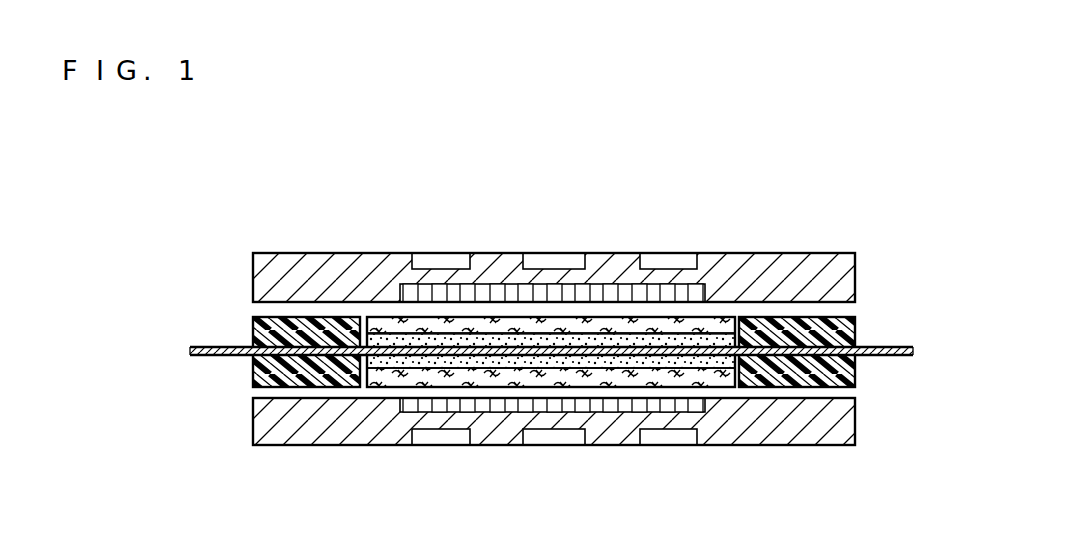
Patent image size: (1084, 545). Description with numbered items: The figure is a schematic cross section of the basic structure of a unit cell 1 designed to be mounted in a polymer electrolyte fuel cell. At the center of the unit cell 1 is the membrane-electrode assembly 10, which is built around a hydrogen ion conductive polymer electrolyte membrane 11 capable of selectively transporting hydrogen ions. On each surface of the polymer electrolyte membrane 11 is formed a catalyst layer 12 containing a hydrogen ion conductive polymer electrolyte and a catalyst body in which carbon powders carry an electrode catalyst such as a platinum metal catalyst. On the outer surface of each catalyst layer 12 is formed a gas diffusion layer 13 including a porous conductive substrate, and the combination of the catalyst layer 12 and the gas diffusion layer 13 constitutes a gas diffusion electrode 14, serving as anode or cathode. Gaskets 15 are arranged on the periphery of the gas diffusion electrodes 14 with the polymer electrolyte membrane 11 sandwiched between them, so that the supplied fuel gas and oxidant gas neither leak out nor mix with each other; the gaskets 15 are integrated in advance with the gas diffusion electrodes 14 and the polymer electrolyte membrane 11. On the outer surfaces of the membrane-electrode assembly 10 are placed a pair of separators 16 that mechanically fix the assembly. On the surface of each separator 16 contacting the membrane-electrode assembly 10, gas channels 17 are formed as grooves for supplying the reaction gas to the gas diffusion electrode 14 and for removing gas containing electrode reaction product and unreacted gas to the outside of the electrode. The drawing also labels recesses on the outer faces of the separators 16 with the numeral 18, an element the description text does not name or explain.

The unit cell 1 is at (480, 152).
The membrane-electrode assembly 10 is at (524, 321).
The hydrogen ion conductive polymer electrolyte membrane 11 is at (895, 356).
The catalyst layer 12 is at (713, 343).
The gas diffusion layer 13 is at (660, 318).
The gas diffusion electrode 14 is at (582, 321).
The gasket 15 is at (843, 325).
The separator 16 is at (554, 348).
The gas channel 17 is at (497, 295).
The cooling water channel 18 is at (560, 263).